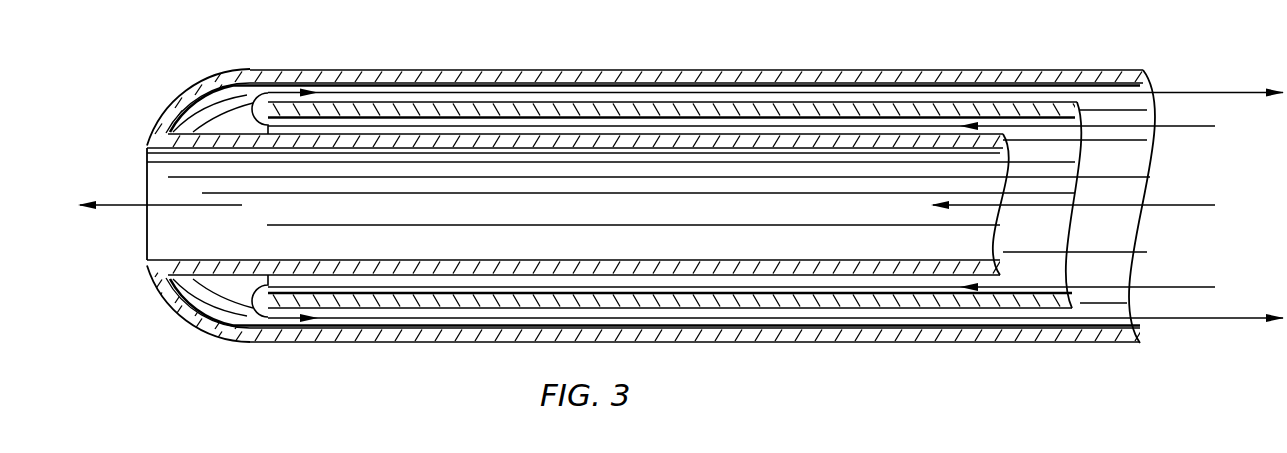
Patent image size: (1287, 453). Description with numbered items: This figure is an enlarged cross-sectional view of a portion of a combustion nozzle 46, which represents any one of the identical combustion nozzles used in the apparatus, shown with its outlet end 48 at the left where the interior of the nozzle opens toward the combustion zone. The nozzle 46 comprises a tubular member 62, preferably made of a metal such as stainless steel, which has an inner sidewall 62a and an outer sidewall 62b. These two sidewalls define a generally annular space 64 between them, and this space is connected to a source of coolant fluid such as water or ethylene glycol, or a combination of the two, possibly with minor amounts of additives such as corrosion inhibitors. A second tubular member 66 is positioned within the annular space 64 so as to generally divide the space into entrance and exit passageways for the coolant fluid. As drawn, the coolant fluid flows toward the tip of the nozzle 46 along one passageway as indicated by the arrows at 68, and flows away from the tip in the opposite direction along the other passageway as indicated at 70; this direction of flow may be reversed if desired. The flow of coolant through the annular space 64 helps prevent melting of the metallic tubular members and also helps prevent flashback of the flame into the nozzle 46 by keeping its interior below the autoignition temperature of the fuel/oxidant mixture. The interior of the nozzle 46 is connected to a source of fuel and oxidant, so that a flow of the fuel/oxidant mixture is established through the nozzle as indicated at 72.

The nozzle 46 is at (651, 176).
The outlet end 48 is at (614, 206).
The tubular member 62 is at (651, 176).
The inner sidewall 62a is at (500, 148).
The outer sidewall 62b is at (676, 76).
The annular space 64 is at (230, 103).
The tubular member 66 is at (740, 104).
The coolant fluid flow toward the tip 68 is at (1215, 127).
The coolant fluid flow away from the tip 70 is at (1226, 92).
The fuel/oxidant mixture flow 72 is at (1200, 206).